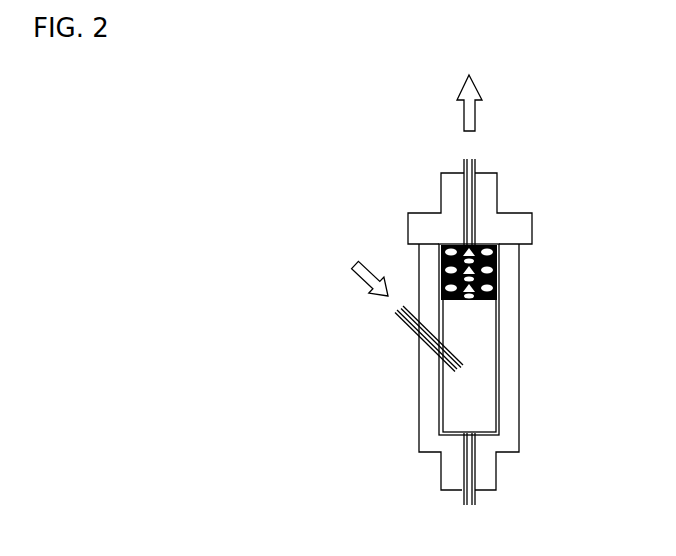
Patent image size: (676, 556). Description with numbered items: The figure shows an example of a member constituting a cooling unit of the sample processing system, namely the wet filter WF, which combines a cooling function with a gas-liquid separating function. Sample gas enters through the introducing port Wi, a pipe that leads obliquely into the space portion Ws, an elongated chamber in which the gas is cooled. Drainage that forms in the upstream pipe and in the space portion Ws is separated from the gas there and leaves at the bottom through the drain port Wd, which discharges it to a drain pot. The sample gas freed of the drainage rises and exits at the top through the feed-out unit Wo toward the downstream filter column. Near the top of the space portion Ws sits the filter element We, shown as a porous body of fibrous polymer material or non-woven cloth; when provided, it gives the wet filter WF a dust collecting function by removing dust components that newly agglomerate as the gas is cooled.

The wet filter WF is at (534, 162).
The feed-out unit Wo is at (464, 167).
The filter element We is at (497, 279).
The space portion Ws is at (499, 373).
The introducing port Wi is at (406, 324).
The drain port Wd is at (472, 498).